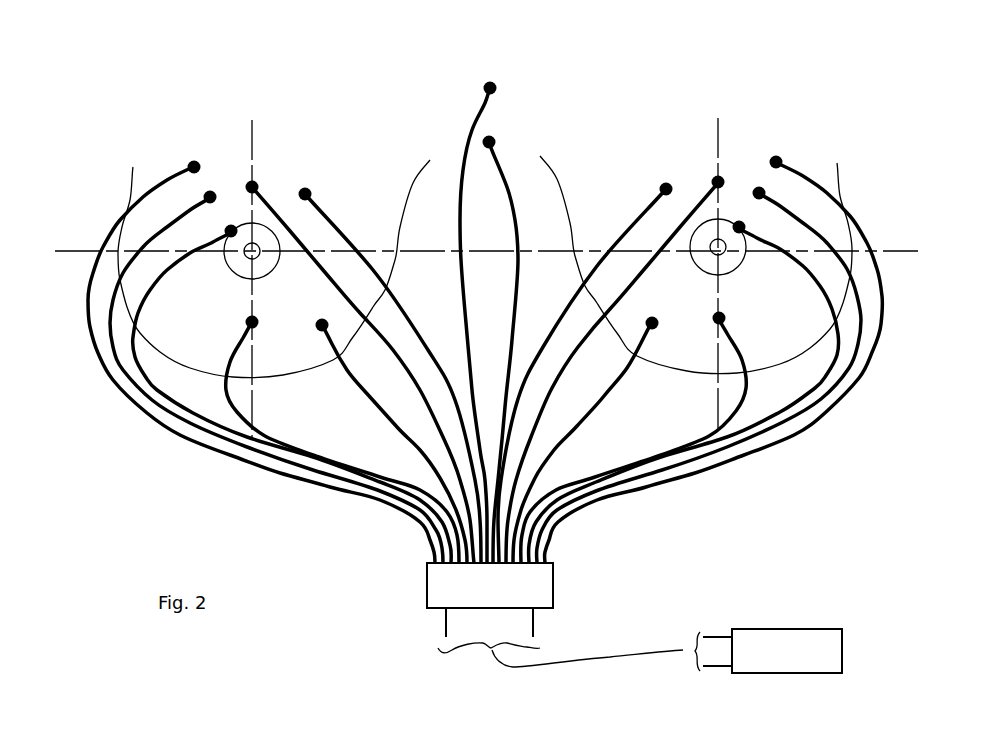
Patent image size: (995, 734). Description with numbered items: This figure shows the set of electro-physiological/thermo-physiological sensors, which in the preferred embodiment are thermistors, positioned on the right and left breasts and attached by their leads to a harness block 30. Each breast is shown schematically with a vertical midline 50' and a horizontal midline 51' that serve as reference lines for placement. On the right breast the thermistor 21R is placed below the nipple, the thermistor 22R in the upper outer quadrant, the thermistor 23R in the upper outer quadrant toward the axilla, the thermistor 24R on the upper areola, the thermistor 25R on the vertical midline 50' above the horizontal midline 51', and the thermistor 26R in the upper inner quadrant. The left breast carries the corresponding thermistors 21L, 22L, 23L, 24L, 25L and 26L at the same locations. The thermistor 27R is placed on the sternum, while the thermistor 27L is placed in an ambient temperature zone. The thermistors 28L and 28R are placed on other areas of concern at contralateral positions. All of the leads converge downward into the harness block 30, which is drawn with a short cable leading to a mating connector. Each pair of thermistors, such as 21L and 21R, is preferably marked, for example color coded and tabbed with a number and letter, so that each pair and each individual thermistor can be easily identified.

The thermistor 21R is at (250, 322).
The thermistor 22R is at (211, 195).
The thermistor 23R is at (193, 166).
The thermistor 24R is at (231, 235).
The thermistor 25R is at (253, 185).
The thermistor 26R is at (305, 193).
The thermistor 27R is at (489, 87).
The thermistor 28R is at (321, 328).
The thermistor 21L is at (721, 317).
The thermistor 22L is at (757, 192).
The thermistor 23L is at (777, 161).
The thermistor 24L is at (739, 230).
The thermistor 25L is at (717, 181).
The thermistor 26L is at (665, 188).
The thermistor 27L is at (491, 141).
The thermistor 28L is at (652, 326).
The vertical midline 50' is at (485, 253).
The horizontal midline 51' is at (476, 217).
The harness block 30 is at (763, 630).